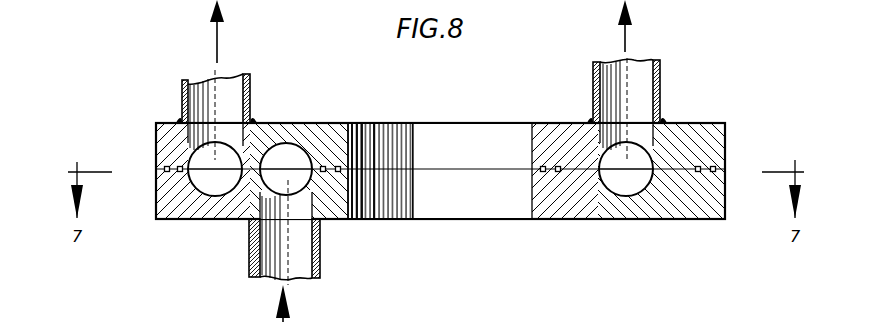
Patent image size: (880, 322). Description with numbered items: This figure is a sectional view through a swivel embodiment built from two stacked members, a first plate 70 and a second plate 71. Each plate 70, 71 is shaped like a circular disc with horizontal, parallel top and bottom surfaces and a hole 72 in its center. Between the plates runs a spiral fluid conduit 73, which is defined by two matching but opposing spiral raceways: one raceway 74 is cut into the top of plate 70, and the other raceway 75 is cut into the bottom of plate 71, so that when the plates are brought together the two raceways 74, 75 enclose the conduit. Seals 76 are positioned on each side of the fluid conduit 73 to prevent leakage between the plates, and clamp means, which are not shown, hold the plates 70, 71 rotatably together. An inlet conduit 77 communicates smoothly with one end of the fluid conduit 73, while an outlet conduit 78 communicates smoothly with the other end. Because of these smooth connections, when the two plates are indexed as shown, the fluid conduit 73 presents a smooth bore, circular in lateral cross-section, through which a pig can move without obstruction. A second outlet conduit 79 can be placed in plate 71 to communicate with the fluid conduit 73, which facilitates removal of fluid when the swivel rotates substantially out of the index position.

The plate 70 is at (342, 221).
The plate 71 is at (286, 123).
The hole 72 is at (397, 136).
The spiral fluid conduit 73 is at (218, 157).
The raceway 74 is at (206, 192).
The raceway 75 is at (190, 154).
The seals 76 is at (180, 165).
The inlet conduit 77 is at (292, 283).
The outlet conduit 78 is at (241, 76).
The second outlet conduit 79 is at (650, 63).